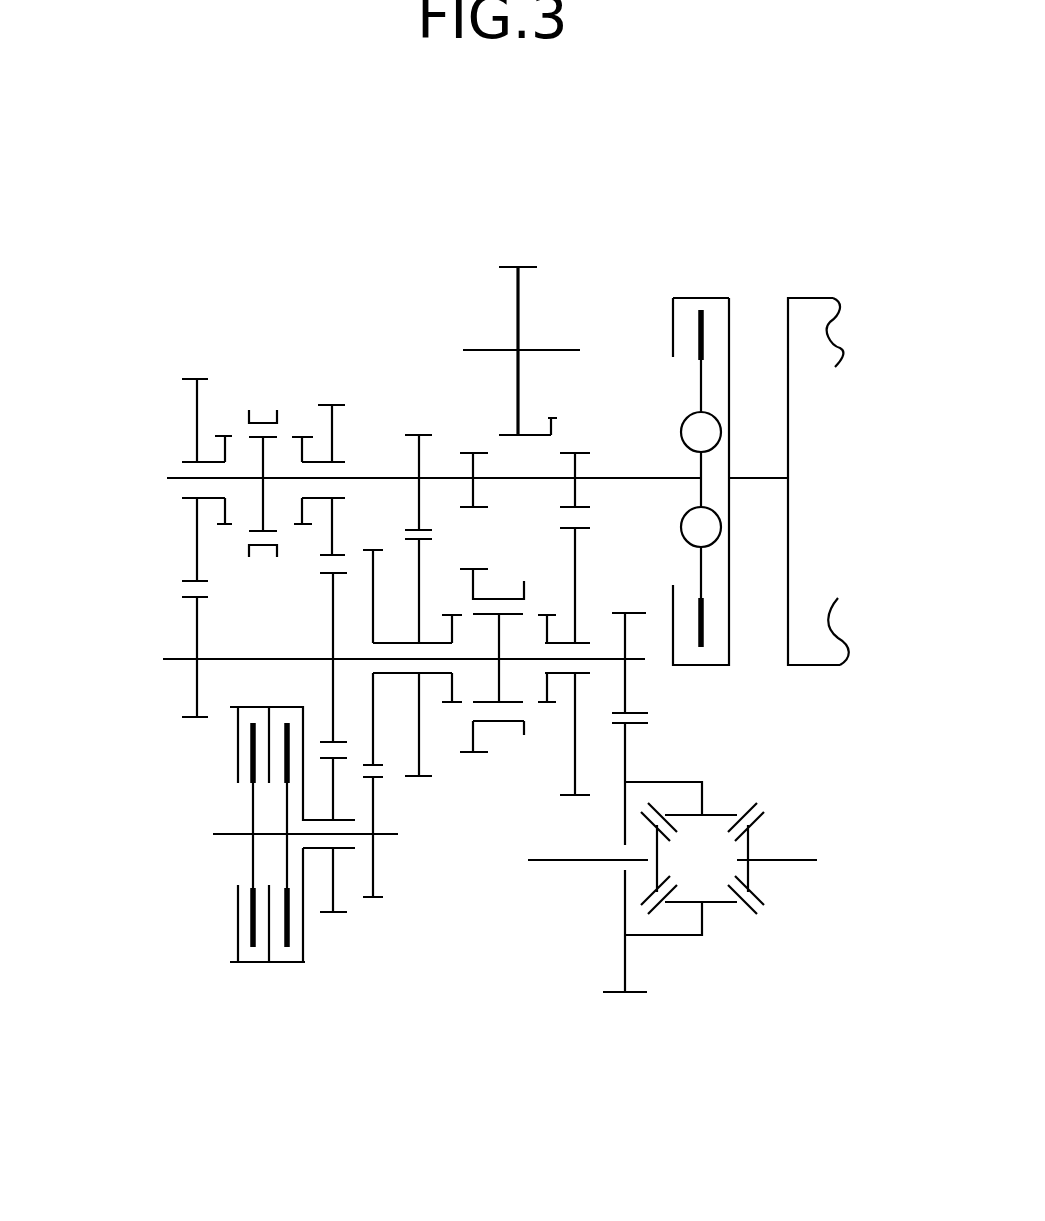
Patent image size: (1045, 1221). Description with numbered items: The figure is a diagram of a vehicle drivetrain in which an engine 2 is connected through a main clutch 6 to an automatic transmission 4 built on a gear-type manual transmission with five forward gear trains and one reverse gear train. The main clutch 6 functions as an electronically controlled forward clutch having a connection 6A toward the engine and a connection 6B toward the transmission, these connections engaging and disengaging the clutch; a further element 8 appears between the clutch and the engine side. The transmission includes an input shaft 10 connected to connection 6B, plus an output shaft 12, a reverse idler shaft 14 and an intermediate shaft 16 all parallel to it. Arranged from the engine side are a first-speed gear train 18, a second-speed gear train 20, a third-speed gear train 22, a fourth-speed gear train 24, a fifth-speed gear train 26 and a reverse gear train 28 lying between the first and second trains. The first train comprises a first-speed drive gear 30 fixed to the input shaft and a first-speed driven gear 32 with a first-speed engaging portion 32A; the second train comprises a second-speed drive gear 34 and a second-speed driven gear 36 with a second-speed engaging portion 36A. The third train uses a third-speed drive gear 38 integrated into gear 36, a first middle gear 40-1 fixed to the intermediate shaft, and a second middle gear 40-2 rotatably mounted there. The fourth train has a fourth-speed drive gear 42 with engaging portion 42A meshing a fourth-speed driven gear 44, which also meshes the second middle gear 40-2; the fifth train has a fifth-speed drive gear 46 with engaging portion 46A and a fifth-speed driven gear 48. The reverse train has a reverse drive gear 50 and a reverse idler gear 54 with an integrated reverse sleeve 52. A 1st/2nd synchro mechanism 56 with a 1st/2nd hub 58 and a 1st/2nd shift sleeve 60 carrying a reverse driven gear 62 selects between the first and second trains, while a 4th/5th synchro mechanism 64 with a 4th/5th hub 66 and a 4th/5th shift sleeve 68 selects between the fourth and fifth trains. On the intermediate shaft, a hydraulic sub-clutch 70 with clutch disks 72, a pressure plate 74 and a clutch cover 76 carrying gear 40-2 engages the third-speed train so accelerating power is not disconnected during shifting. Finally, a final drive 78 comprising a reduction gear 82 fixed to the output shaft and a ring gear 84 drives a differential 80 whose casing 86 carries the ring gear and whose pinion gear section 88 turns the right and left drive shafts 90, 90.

The engine 2 is at (816, 298).
The automatic transmission 4 is at (773, 384).
The main clutch 6 is at (729, 424).
The connection toward the engine 6A is at (710, 298).
The connection toward the automatic transmission 6B is at (707, 345).
The motor shaft 8 is at (757, 478).
The input shaft 10 is at (167, 478).
The output shaft 12 is at (163, 659).
The reverse idler shaft 14 is at (553, 348).
The intermediate shaft 16 is at (228, 833).
The first-speed gear train 18 is at (606, 437).
The second-speed gear train 20 is at (412, 482).
The third-speed gear train 22 is at (395, 876).
The fourth-speed gear train 24 is at (327, 416).
The fifth-speed gear train 26 is at (164, 422).
The reverse gear train 28 is at (525, 333).
The first-speed drive gear 30 is at (578, 468).
The first-speed driven gear 32 is at (577, 557).
The first-speed engaging portion 32A is at (548, 625).
The second-speed drive gear 34 is at (423, 463).
The second-speed driven gear 36 is at (420, 753).
The second-speed engaging portion 36A is at (453, 707).
The third-speed drive gear 38 is at (377, 742).
The first middle gear 40-1 is at (377, 867).
The second middle gear 40-2 is at (333, 893).
The fourth-speed drive gear 42 is at (333, 430).
The fourth-speed engaging portion 42A is at (303, 452).
The fourth-speed driven gear 44 is at (333, 640).
The fifth-speed drive gear 46 is at (197, 403).
The fifth-speed engaging portion 46A is at (222, 455).
The fifth-speed driven gear 48 is at (197, 632).
The reverse drive gear 50 is at (473, 473).
The reverse sleeve 52 is at (553, 417).
The reverse idler gear 54 is at (522, 313).
The 1st/2nd synchro mechanism 56 is at (525, 787).
The 1st/2nd hub 58 is at (500, 680).
The 1st/2nd shift sleeve 60 is at (517, 725).
The reverse driven gear 62 is at (492, 755).
The 4th/5th synchro mechanism 64 is at (263, 392).
The 4th/5th hub 66 is at (260, 503).
The 4th/5th shift sleeve 68 is at (260, 553).
The hydraulic sub-clutch 70 is at (244, 896).
The clutch disks 72 is at (250, 926).
The pressure plate 74 is at (240, 908).
The clutch cover 76 is at (291, 965).
The final drive 78 is at (718, 729).
The differential 80 is at (679, 885).
The reduction gear 82 is at (627, 687).
The ring gear 84 is at (627, 970).
The casing 86 is at (702, 793).
The pinion gear section 88 is at (718, 905).
The drive shafts 90 is at (583, 862).